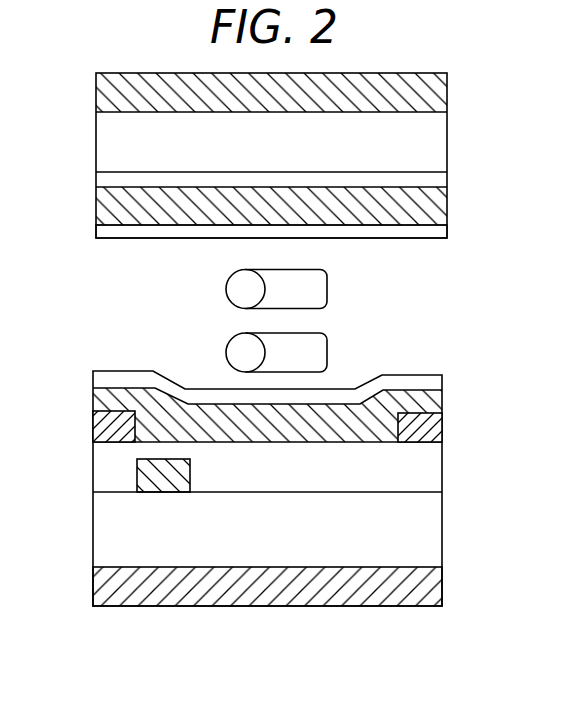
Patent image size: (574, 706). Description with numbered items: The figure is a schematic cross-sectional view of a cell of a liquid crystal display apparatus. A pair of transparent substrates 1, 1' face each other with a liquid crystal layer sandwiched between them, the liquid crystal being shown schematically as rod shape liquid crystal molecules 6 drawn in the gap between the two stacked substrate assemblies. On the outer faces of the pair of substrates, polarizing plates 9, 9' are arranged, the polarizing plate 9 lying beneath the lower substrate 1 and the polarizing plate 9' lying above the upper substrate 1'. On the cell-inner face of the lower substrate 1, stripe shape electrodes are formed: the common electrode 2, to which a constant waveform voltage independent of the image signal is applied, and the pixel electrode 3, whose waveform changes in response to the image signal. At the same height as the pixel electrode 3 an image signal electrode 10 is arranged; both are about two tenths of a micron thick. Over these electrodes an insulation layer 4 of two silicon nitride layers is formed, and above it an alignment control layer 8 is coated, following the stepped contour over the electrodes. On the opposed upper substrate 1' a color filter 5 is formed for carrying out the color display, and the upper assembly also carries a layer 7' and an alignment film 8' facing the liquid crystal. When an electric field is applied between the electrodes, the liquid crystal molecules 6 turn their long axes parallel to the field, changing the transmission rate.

The transparent substrate 1 is at (243, 488).
The transparent substrate 1' is at (247, 155).
The common electrode 2 is at (175, 480).
The pixel electrode 3 is at (442, 435).
The insulation layer 4 is at (342, 433).
The color filter 5 is at (438, 178).
The liquid crystal molecular 6 is at (227, 288).
The color filter layer 7' is at (299, 206).
The alignment control layer 8 is at (295, 378).
The alignment film 8' is at (298, 253).
The polarizing plate 9 is at (267, 610).
The polarizing plate 9' is at (247, 89).
The image signal electrode 10 is at (102, 427).